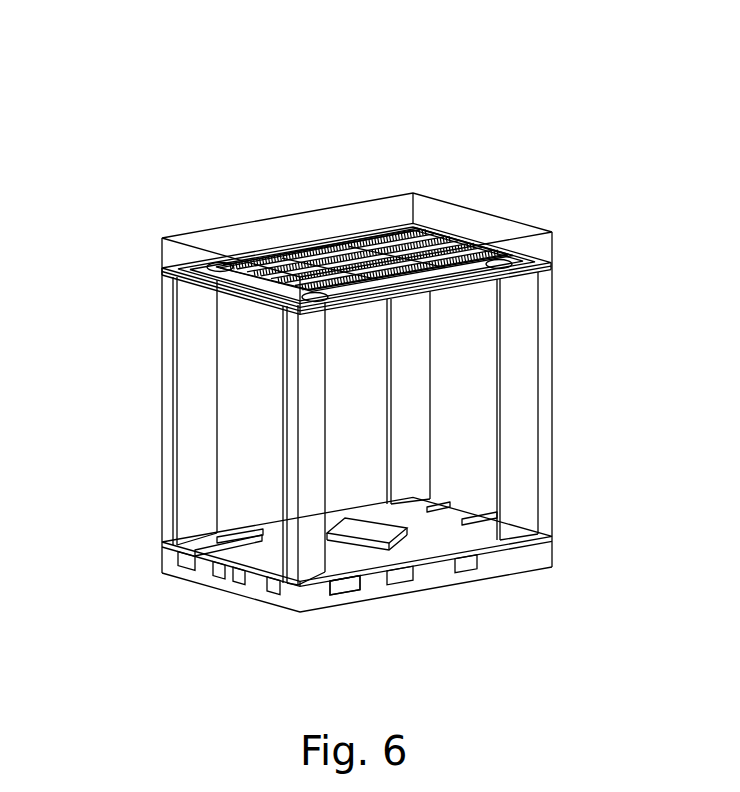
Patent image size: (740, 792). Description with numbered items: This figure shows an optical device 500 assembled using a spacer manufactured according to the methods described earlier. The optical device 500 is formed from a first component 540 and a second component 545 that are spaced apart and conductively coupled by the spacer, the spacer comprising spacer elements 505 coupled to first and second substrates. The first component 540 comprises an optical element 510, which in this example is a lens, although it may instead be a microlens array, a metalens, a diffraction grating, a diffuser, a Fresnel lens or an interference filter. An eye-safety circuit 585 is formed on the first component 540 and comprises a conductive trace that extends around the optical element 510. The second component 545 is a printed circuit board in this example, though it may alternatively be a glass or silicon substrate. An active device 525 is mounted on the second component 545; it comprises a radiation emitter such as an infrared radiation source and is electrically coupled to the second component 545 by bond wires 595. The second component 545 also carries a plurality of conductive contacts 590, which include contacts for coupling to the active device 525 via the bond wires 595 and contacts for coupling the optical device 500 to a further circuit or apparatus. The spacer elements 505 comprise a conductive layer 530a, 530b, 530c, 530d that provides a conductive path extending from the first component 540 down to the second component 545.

The optical device 500 is at (93, 90).
The spacer elements 505 is at (230, 467).
The optical element 510 is at (375, 252).
The active device 525 is at (440, 507).
The conductive layer 530a is at (188, 503).
The conductive layer 530b is at (293, 550).
The conductive layer 530c is at (410, 368).
The conductive layer 530d is at (522, 363).
The first component 540 is at (340, 220).
The second component 545 is at (443, 577).
The eye-safety circuit 585 is at (198, 262).
The conductive contacts 590 is at (347, 582).
The bond wires 595 is at (345, 530).